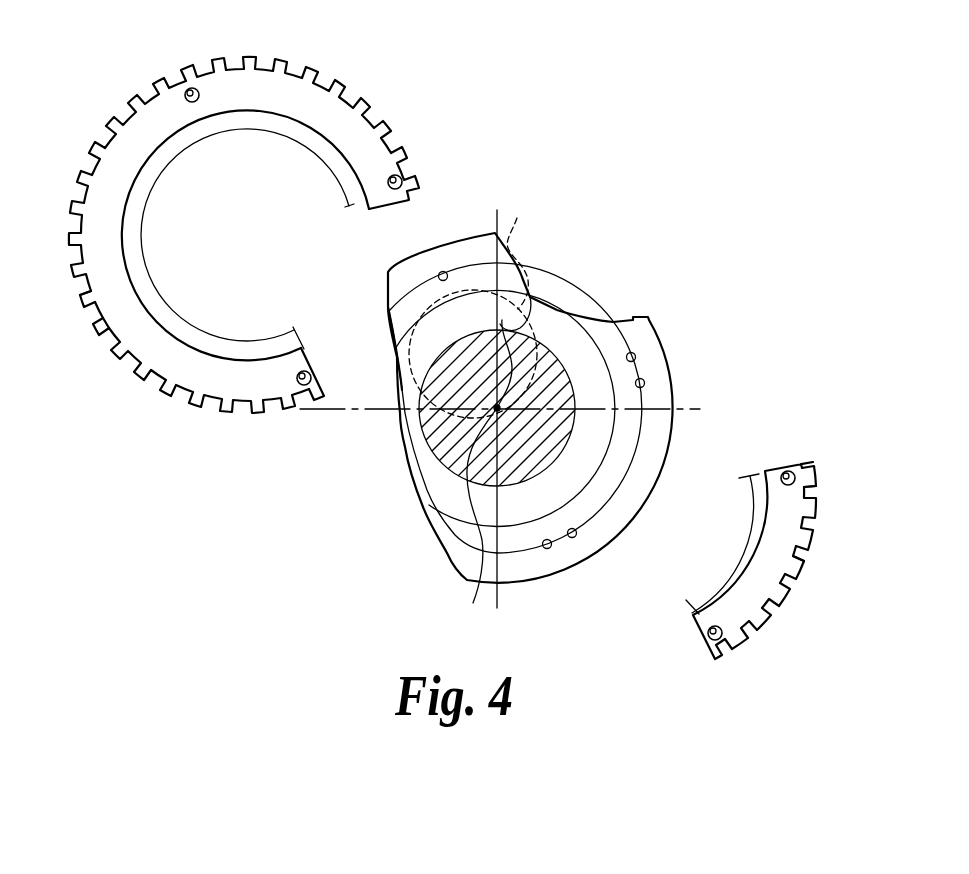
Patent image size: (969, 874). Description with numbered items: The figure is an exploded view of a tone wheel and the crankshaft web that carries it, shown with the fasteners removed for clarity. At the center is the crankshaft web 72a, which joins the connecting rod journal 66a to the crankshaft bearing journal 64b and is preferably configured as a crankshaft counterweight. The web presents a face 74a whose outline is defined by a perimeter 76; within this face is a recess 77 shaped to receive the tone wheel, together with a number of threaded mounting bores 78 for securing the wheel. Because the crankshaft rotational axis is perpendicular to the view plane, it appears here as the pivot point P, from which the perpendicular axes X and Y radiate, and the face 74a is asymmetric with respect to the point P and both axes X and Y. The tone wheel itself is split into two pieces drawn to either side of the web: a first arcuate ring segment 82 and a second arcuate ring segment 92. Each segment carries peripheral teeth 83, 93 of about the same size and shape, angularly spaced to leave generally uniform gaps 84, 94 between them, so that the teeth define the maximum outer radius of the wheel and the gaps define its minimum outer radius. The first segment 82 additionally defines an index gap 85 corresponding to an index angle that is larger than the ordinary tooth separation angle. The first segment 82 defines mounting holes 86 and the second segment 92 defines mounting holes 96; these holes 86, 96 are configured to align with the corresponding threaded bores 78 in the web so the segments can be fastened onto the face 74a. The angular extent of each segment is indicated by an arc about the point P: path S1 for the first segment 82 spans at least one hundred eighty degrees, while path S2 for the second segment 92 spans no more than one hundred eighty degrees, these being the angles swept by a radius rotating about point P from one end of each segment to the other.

The first arcuate ring segment 82 is at (228, 239).
The peripheral teeth 83 is at (102, 330).
The gaps 84 is at (150, 383).
The index gap 85 is at (110, 140).
The mounting holes 86 is at (195, 88).
The path S1 is at (283, 130).
The crankshaft web 72a is at (510, 436).
The face 74a is at (498, 513).
The perimeter 76 is at (405, 450).
The recess 77 is at (462, 540).
The threaded mounting bores 78 is at (444, 271).
The crankshaft bearing journal 64b is at (625, 525).
The connecting rod journal 66a is at (478, 306).
The axis X is at (362, 412).
The axis Y is at (531, 294).
The pivot point P is at (477, 516).
The second arcuate ring segment 92 is at (788, 568).
The peripheral teeth 93 is at (790, 613).
The gaps 94 is at (820, 535).
The mounting holes 96 is at (789, 470).
The path S2 is at (740, 530).